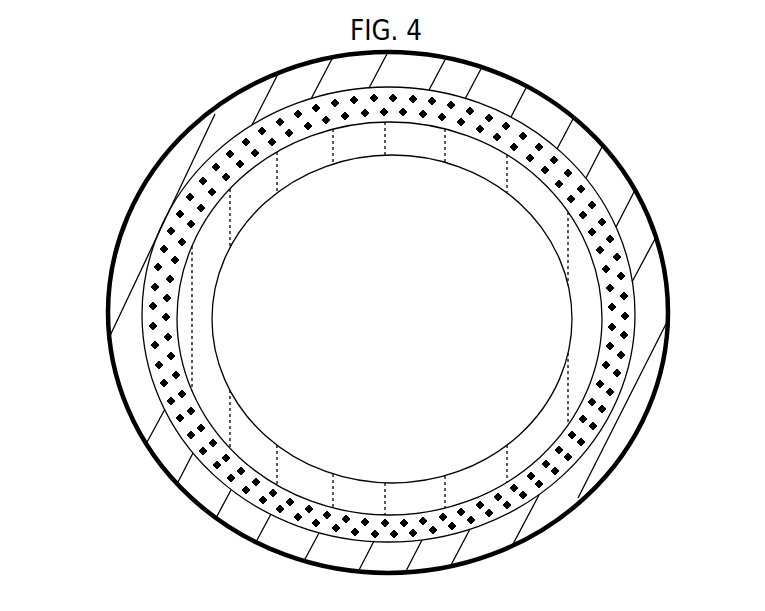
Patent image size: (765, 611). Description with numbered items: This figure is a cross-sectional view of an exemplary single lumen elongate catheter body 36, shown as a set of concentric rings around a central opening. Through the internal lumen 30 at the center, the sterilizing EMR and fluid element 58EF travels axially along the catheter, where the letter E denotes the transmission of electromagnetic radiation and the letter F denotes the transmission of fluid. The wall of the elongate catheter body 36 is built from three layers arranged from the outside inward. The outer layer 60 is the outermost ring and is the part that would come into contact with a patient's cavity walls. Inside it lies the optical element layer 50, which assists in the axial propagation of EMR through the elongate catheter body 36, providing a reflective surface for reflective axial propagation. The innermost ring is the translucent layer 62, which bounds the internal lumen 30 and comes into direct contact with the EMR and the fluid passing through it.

The internal lumen 30 is at (530, 347).
The elongate catheter body 36 is at (565, 518).
The optical element layer 50 is at (157, 322).
The sterilizing EMR and fluid element 58EF is at (590, 217).
The outer layer 60 is at (282, 530).
The translucent layer 62 is at (212, 237).